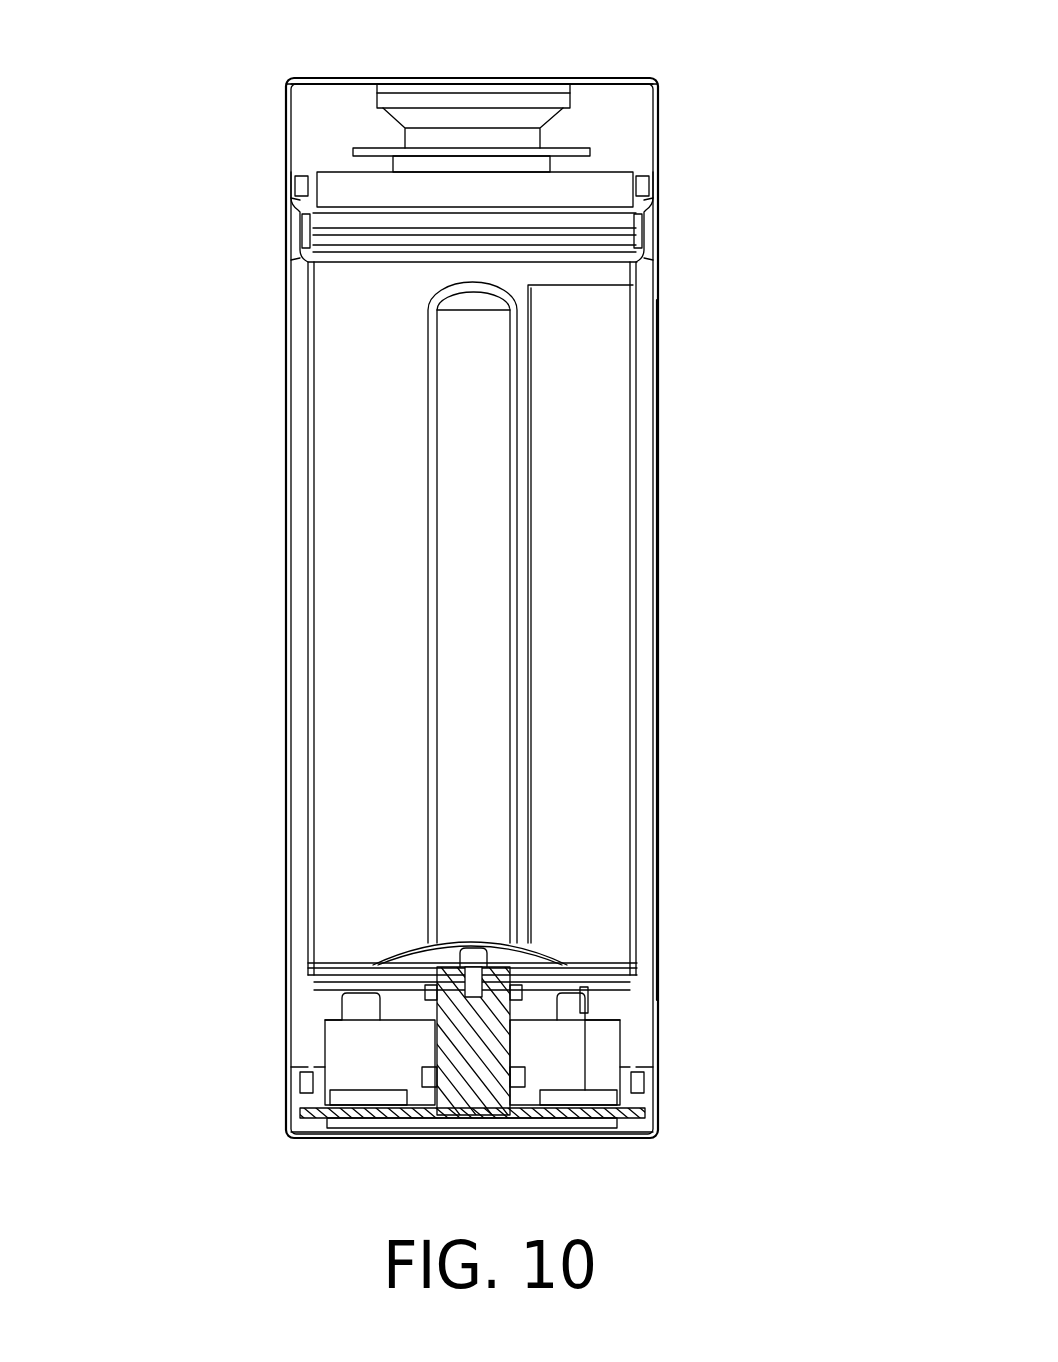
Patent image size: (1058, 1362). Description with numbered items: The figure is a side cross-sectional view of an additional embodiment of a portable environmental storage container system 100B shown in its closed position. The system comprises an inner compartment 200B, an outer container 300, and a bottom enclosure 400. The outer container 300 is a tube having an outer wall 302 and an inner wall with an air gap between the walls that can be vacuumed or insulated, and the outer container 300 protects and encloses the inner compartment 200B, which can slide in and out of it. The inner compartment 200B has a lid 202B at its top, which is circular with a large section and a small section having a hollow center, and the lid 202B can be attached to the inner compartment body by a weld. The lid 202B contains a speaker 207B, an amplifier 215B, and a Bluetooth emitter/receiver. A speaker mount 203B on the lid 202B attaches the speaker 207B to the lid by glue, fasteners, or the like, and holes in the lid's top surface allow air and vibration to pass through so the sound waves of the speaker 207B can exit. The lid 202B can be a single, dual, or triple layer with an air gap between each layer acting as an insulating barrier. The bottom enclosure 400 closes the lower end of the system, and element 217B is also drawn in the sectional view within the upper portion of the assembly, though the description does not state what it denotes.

The portable environmental storage container system 100B is at (265, 102).
The inner compartment 200B is at (300, 362).
The lid 202B is at (610, 110).
The speaker mount 203B is at (568, 93).
The speaker 207B is at (527, 118).
The amplifier 215B is at (415, 163).
The current collector plate 217B is at (594, 185).
The outer container 300 is at (662, 543).
The outer wall 302 is at (660, 673).
The bottom enclosure 400 is at (662, 1098).